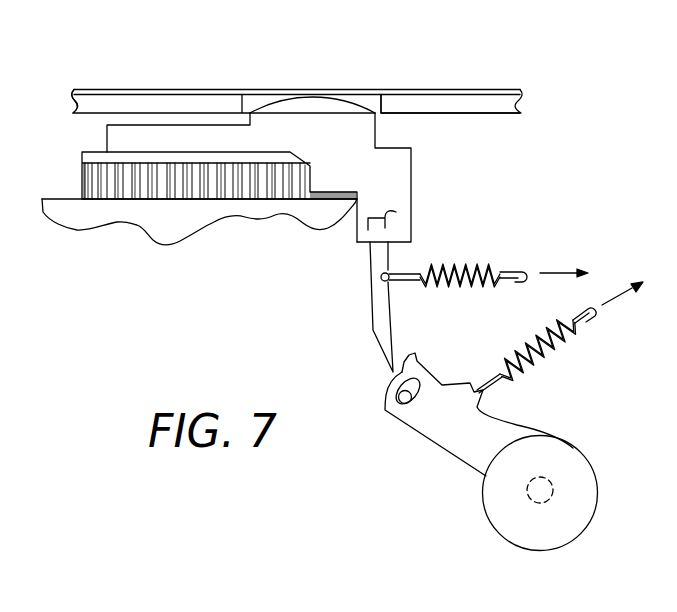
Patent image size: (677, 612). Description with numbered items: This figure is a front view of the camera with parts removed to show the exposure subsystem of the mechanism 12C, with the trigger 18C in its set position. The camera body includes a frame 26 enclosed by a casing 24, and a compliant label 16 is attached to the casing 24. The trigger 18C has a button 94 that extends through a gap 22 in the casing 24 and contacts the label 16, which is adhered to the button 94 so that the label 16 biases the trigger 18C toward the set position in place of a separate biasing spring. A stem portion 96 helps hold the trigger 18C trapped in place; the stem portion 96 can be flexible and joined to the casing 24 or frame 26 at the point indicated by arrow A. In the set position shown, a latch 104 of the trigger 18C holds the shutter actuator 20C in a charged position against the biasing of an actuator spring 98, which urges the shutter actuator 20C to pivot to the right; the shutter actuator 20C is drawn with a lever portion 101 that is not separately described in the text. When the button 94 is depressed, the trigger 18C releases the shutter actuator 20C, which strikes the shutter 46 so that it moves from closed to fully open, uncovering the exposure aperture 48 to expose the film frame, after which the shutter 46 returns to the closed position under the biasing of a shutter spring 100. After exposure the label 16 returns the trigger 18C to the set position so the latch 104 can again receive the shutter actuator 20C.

The mechanism 12C is at (540, 62).
The compliant label 16 is at (153, 90).
The trigger 18C is at (411, 148).
The shutter actuator 20C is at (372, 292).
The gap 22 is at (378, 89).
The casing 24 is at (73, 92).
The frame 26 is at (143, 232).
The shutter 46 is at (495, 513).
The exposure aperture 48 is at (553, 482).
The button 94 is at (305, 103).
The stem portion 96 is at (178, 138).
The actuator spring 98 is at (517, 268).
The shutter spring 100 is at (576, 326).
The lever 101 is at (407, 363).
The latch 104 is at (395, 215).
The arrow A is at (98, 137).